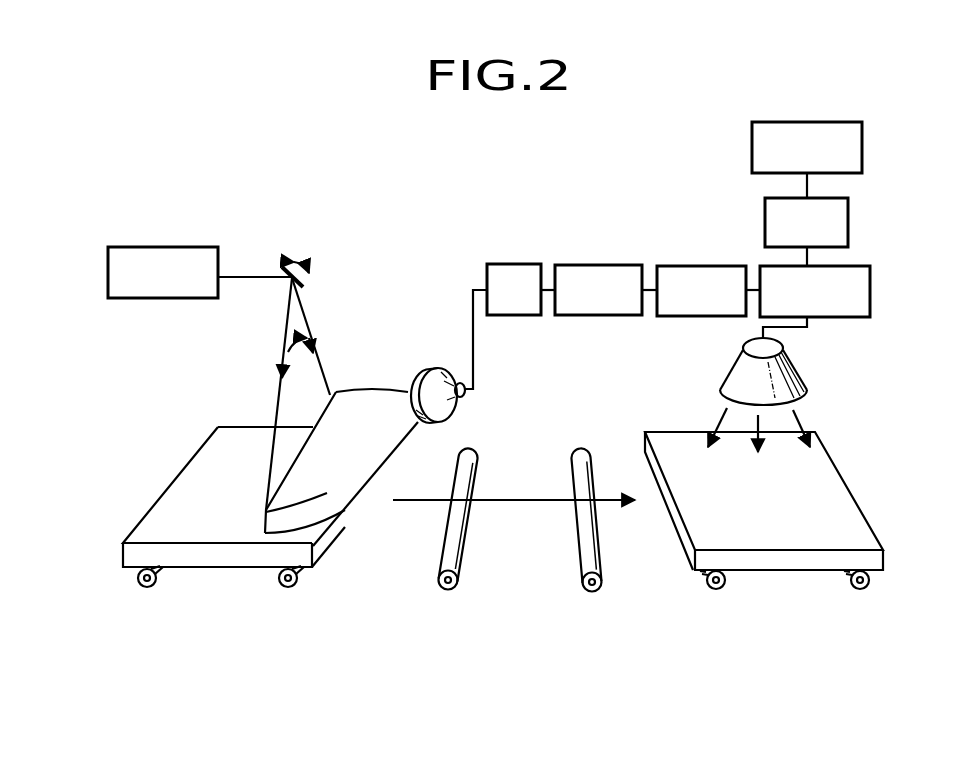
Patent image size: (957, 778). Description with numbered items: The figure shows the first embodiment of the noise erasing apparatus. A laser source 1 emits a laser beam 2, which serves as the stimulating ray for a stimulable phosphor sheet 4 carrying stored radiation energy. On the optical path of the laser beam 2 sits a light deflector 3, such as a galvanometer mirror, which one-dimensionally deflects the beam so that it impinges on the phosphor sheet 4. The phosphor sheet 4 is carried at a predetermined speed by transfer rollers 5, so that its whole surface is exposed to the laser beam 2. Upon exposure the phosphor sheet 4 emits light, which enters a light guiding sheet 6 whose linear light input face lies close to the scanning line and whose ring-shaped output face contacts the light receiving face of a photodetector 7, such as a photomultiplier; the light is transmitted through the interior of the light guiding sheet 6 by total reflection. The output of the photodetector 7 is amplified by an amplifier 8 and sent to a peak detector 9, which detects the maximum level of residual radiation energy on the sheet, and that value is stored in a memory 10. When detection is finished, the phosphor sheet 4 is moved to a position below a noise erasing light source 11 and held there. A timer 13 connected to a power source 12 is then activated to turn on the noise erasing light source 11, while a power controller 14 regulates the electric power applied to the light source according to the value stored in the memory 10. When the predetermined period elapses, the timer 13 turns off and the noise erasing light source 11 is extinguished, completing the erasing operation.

The laser source 1 is at (108, 270).
The laser beam 2 is at (250, 275).
The light deflector 3 is at (285, 264).
The stimulable phosphor sheet 4 is at (150, 518).
The transfer rollers 5 is at (152, 587).
The light guiding sheet 6 is at (372, 403).
The photodetector 7 is at (433, 377).
The amplifier 8 is at (515, 264).
The peak detector 9 is at (610, 265).
The memory 10 is at (700, 265).
The noise erasing light source 11 is at (800, 372).
The power source 12 is at (863, 140).
The timer 13 is at (848, 220).
The power controller 14 is at (870, 295).